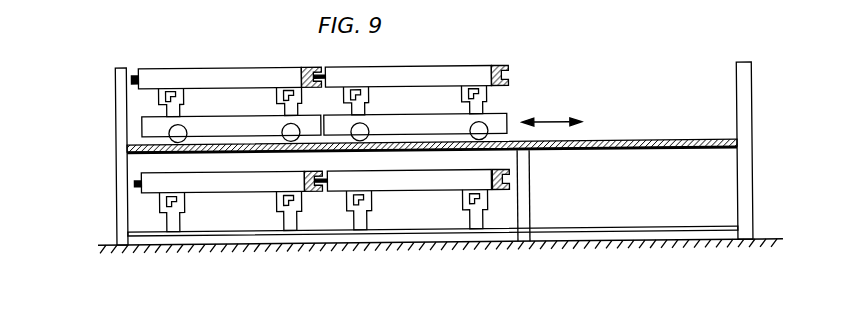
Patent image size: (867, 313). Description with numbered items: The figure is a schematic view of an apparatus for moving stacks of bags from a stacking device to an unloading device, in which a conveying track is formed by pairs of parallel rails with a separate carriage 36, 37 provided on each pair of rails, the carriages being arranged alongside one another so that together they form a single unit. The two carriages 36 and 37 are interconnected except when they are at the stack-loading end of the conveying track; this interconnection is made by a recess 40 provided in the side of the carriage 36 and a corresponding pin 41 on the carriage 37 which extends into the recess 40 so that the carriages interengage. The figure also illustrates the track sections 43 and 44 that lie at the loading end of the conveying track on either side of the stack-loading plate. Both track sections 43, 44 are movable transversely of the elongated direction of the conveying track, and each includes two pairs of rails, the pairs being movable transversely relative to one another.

The carriage 36 is at (199, 78).
The carriage 37 is at (465, 78).
The recess 40 is at (511, 77).
The pin 41 is at (117, 79).
The track section 43 is at (153, 155).
The track section 44 is at (404, 187).